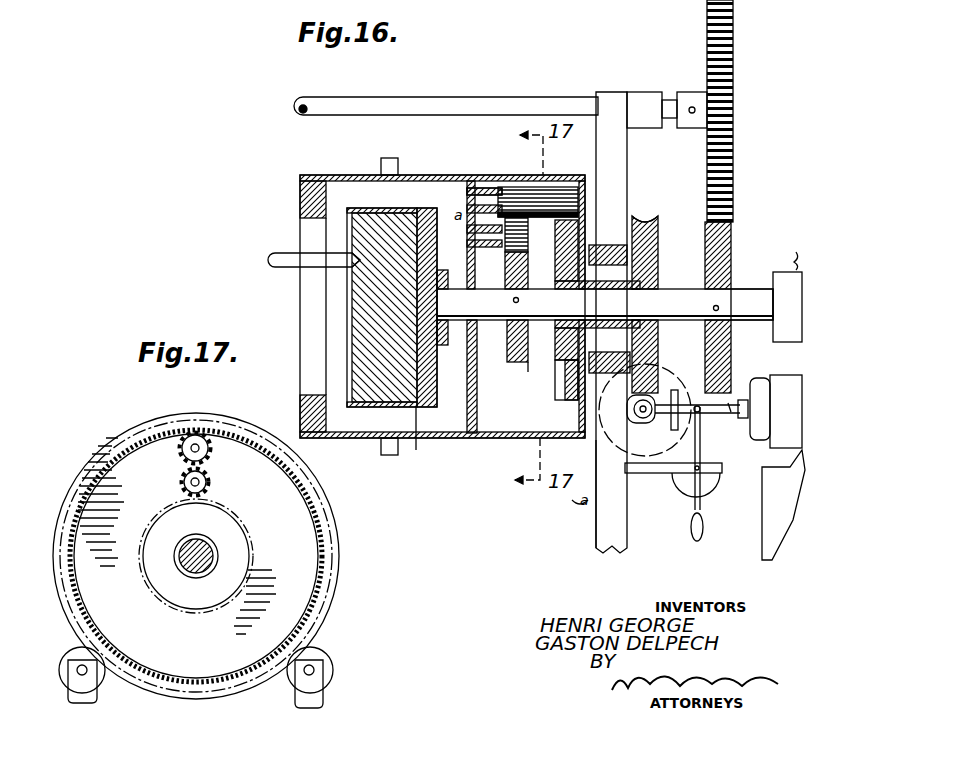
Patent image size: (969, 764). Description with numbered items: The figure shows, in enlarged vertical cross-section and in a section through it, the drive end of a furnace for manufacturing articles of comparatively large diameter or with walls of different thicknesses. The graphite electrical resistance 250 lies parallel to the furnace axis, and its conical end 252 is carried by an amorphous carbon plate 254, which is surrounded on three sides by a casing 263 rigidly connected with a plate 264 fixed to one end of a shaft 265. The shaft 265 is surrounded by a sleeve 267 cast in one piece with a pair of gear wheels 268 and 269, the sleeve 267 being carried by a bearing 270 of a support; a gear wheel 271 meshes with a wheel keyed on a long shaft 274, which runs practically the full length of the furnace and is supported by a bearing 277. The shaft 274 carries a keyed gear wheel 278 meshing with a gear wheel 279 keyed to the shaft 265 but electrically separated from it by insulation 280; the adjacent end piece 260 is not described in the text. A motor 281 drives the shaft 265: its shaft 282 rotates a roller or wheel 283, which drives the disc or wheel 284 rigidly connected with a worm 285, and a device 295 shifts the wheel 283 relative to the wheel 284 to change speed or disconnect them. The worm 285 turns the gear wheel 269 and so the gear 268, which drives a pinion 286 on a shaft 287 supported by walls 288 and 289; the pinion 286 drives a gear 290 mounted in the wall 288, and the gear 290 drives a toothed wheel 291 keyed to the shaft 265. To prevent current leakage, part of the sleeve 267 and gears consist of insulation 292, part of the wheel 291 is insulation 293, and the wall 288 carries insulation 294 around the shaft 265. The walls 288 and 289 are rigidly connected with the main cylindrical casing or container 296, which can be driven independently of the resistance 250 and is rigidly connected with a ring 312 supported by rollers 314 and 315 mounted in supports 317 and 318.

In FIG. 16, the electrical resistance or heating element 250 is at (280, 252).
In FIG. 16, the conical end of the resistance 252 is at (352, 266).
In FIG. 16, the plate 254 is at (437, 441).
In FIG. 16, the end knob 260 is at (784, 272).
In FIG. 16, the casing 263 is at (384, 210).
In FIG. 16, the plate 264 is at (432, 212).
In FIG. 16, the shaft 265 is at (488, 323).
In FIG. 17, the shaft 265 is at (210, 562).
In FIG. 16, the sleeve 267 is at (704, 240).
In FIG. 16, the gear wheel 268 is at (552, 388).
In FIG. 16, the gear wheel 269 is at (656, 216).
In FIG. 16, the bearing 270 is at (608, 245).
In FIG. 16, the gear wheel 271 is at (596, 505).
In FIG. 16, the shaft 274 is at (455, 104).
In FIG. 16, the bearing 277 is at (612, 96).
In FIG. 16, the gear wheel 278 is at (733, 52).
In FIG. 16, the gear wheel 279 is at (734, 228).
In FIG. 16, the insulation 280 is at (736, 272).
In FIG. 16, the motor 281 is at (773, 364).
In FIG. 16, the shaft of the motor 282 is at (710, 418).
In FIG. 16, the roller or wheel 283 is at (684, 398).
In FIG. 16, the disc or wheel 284 is at (648, 376).
In FIG. 16, the worm 285 is at (660, 442).
In FIG. 16, the pinion 286 is at (548, 187).
In FIG. 17, the pinion 286 is at (208, 440).
In FIG. 16, the shaft 287 is at (500, 188).
In FIG. 16, the wall 288 is at (496, 196).
In FIG. 16, the wall 289 is at (590, 183).
In FIG. 16, the gear 290 is at (532, 234).
In FIG. 17, the gear 290 is at (210, 482).
In FIG. 16, the toothed wheel 291 is at (470, 244).
In FIG. 17, the toothed wheel 291 is at (222, 524).
In FIG. 16, the electrical insulation 292 is at (645, 286).
In FIG. 16, the insulation 293 is at (516, 288).
In FIG. 17, the insulation 293 is at (214, 544).
In FIG. 16, the insulation 294 is at (605, 304).
In FIG. 16, the device 295 is at (735, 462).
In FIG. 16, the main cylindrical casing or container 296 is at (343, 175).
In FIG. 17, the main cylindrical casing or container 296 is at (340, 524).
In FIG. 16, the ring 312 is at (391, 158).
In FIG. 17, the ring 312 is at (324, 492).
In FIG. 17, the roller 314 is at (66, 650).
In FIG. 17, the roller 315 is at (332, 660).
In FIG. 17, the support 317 is at (68, 693).
In FIG. 17, the support 318 is at (323, 700).